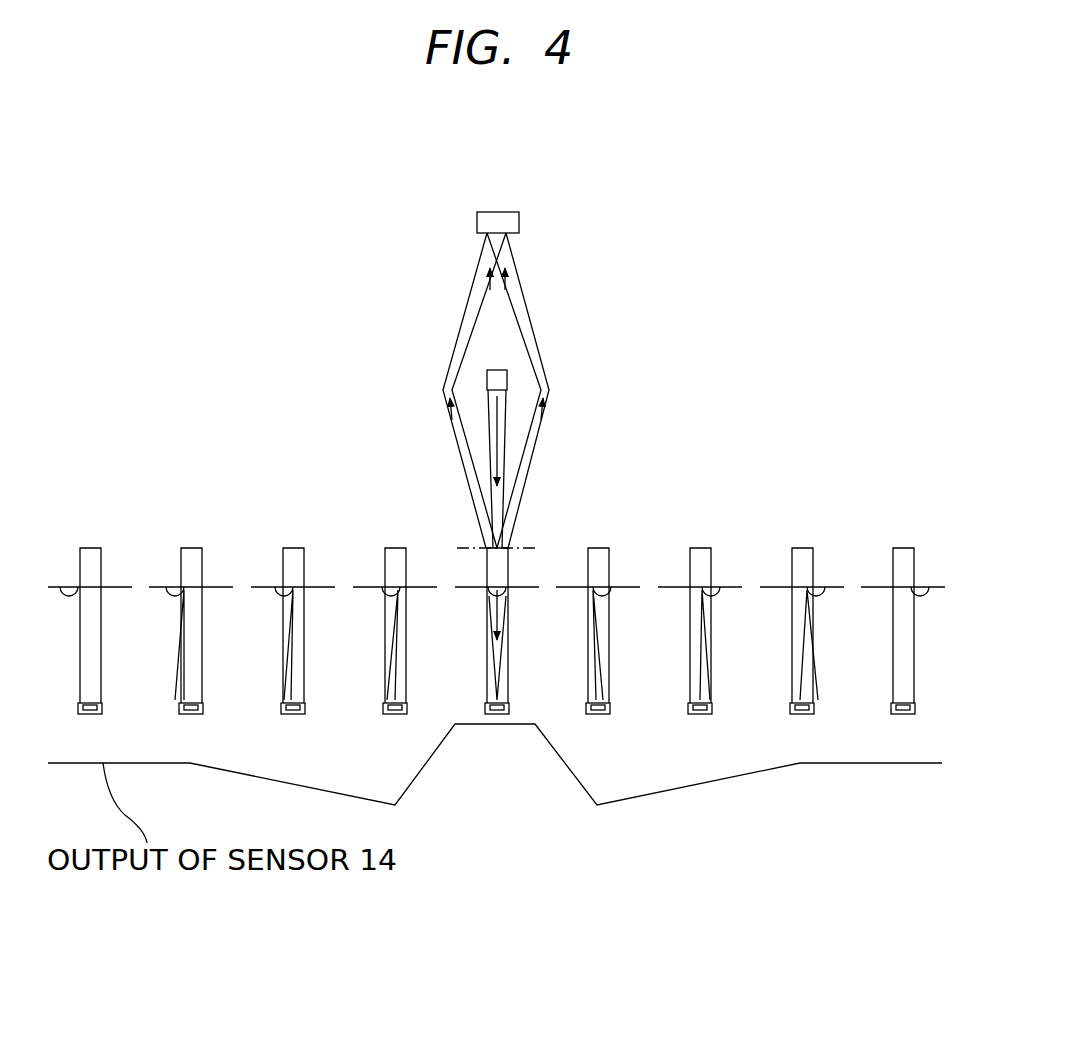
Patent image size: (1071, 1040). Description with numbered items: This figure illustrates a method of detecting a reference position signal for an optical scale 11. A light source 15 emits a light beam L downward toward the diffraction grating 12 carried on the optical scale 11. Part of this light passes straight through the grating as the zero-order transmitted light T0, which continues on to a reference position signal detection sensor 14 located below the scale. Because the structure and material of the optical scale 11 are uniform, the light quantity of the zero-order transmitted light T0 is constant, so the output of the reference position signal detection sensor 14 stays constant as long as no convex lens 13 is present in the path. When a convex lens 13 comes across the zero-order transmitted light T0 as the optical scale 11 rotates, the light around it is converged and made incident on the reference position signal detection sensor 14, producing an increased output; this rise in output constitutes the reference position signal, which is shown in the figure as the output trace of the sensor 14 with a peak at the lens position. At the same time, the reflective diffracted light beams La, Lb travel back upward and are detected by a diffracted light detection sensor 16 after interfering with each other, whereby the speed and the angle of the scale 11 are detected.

The optical scale 11 is at (461, 566).
The diffraction grating 12 is at (522, 545).
The convex lens 13 is at (177, 590).
The reference position signal detection sensor 14 is at (190, 717).
The light source 15 is at (498, 380).
The diffracted light detection sensor 16 is at (498, 222).
The light beam L is at (508, 418).
The reflective diffracted light beam La is at (462, 342).
The reflective diffracted light beam Lb is at (522, 335).
The 0-th order transmitted light T0 is at (496, 653).